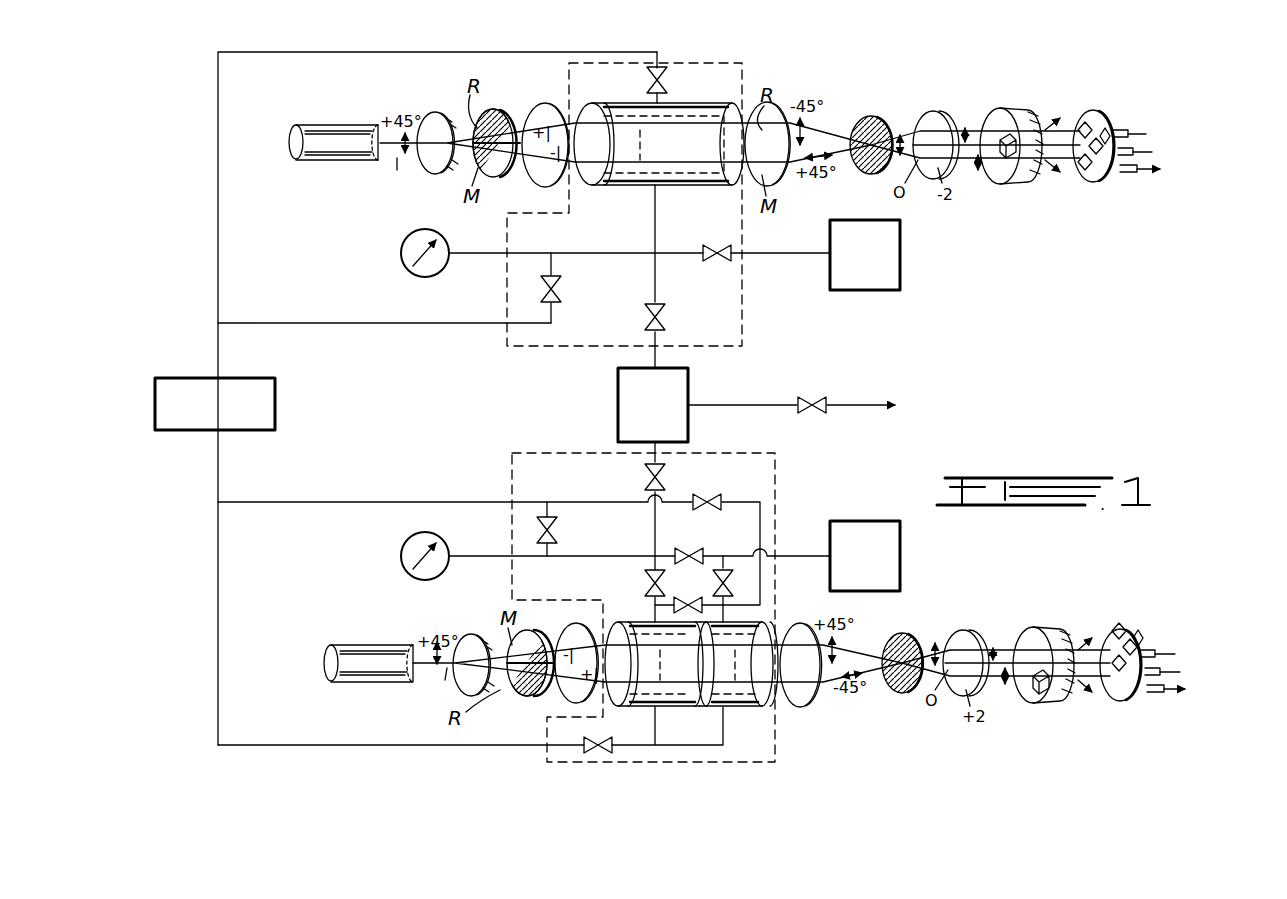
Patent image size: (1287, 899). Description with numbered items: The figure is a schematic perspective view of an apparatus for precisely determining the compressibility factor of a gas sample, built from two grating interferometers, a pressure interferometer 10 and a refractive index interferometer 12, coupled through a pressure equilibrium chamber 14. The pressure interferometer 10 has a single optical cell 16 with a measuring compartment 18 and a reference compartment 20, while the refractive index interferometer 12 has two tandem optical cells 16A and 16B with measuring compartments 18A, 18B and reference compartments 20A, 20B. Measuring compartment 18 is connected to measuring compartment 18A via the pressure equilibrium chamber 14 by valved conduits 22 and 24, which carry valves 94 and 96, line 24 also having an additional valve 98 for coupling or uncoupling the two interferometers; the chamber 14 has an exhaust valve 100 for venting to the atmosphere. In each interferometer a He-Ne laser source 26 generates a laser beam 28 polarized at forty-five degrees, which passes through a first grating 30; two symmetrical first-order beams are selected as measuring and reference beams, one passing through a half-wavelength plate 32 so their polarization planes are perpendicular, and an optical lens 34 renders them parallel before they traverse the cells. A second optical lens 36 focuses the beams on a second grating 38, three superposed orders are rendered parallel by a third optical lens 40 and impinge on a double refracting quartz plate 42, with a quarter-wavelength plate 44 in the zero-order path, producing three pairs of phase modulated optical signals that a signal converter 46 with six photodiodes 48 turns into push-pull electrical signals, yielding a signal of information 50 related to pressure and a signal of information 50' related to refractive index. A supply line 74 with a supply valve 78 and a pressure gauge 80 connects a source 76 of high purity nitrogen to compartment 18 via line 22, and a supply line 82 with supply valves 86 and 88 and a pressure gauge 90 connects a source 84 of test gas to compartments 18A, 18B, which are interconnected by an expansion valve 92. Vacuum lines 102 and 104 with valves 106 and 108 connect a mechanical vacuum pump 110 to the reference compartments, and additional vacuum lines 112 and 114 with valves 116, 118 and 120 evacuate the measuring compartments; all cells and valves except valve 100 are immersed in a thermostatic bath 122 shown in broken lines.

The pressure interferometer 10 is at (1055, 215).
The refractive index interferometer 12 is at (1012, 607).
The pressure equilibrium chamber 14 is at (688, 388).
The optical cell 16 is at (675, 135).
The optical cell 16A is at (616, 655).
The optical cell 16B is at (766, 676).
The measuring compartment 18 is at (600, 185).
The measuring compartment 18A is at (615, 625).
The measuring compartment 18B is at (755, 635).
The reference compartment 20 is at (598, 103).
The reference compartment 20A is at (628, 708).
The reference compartment 20B is at (772, 708).
The valved conduit 22 is at (657, 283).
The valved conduit 24 is at (650, 525).
The He-Ne laser source 26 is at (345, 125).
The laser beam 28 is at (410, 423).
The first grating 30 is at (432, 160).
The half-wavelength plate 32 is at (513, 416).
The optical lens 34 is at (541, 105).
The second optical lens 36 is at (788, 108).
The second grating 38 is at (870, 115).
The third optical lens 40 is at (940, 112).
The double refracting quartz plate 42 is at (1027, 398).
The quarter-wavelength plate 44 is at (1006, 158).
The signal converter 46 is at (1117, 398).
The photodiodes 48 is at (1100, 135).
The signal of information 50 is at (1161, 122).
The signal of information 50' is at (1190, 653).
The supply line 74 is at (810, 258).
The source of high purity nitrogen 76 is at (900, 280).
The supply valve 78 is at (712, 245).
The pressure gauge 80 is at (440, 270).
The supply line 82 is at (800, 556).
The source of the gas under test 84 is at (900, 565).
The supply valve 86 is at (684, 550).
The supply valve 88 is at (728, 568).
The pressure gauge 90 is at (402, 548).
The expansion valve 92 is at (690, 600).
The valve 94 is at (665, 325).
The valve 96 is at (645, 582).
The additional valve 98 is at (664, 475).
The exhaust valve 100 is at (812, 390).
The vacuum line 102 is at (218, 255).
The vacuum line 104 is at (218, 640).
The valve 106 is at (660, 88).
The valve 108 is at (585, 740).
The mechanical vacuum pump 110 is at (275, 392).
The vacuum line 112 is at (310, 322).
The vacuum line 114 is at (325, 502).
The valve 116 is at (560, 283).
The valve 118 is at (545, 518).
The valve 120 is at (712, 502).
The thermostatic bath 122 is at (735, 328).